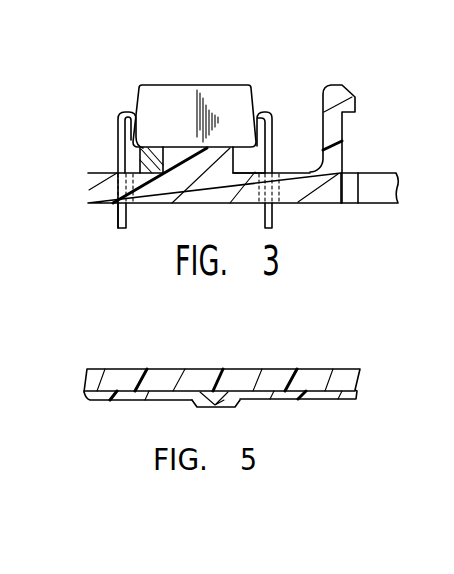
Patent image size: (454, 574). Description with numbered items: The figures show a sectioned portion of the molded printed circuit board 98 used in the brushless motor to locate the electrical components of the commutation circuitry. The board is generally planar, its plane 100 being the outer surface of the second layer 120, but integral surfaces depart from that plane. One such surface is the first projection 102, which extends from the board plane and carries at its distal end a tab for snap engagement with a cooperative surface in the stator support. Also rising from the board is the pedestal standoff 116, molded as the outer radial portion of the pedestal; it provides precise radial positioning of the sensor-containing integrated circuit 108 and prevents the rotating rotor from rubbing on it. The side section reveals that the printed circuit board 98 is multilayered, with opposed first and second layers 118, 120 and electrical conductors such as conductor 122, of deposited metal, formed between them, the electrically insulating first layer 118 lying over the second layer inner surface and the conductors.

In FIG. 5, the printed circuit board 98 is at (330, 354).
In FIG. 3, the plane of the board 100 is at (366, 172).
In FIG. 5, the plane of the board 100 is at (136, 369).
In FIG. 3, the first projection 102 is at (317, 112).
In FIG. 3, the integrated circuit 108 is at (187, 98).
In FIG. 3, the pedestal standoff 116 is at (157, 177).
In FIG. 5, the first layer 118 is at (287, 395).
In FIG. 5, the second layer 120 is at (308, 378).
In FIG. 5, the conductor 122 is at (220, 405).